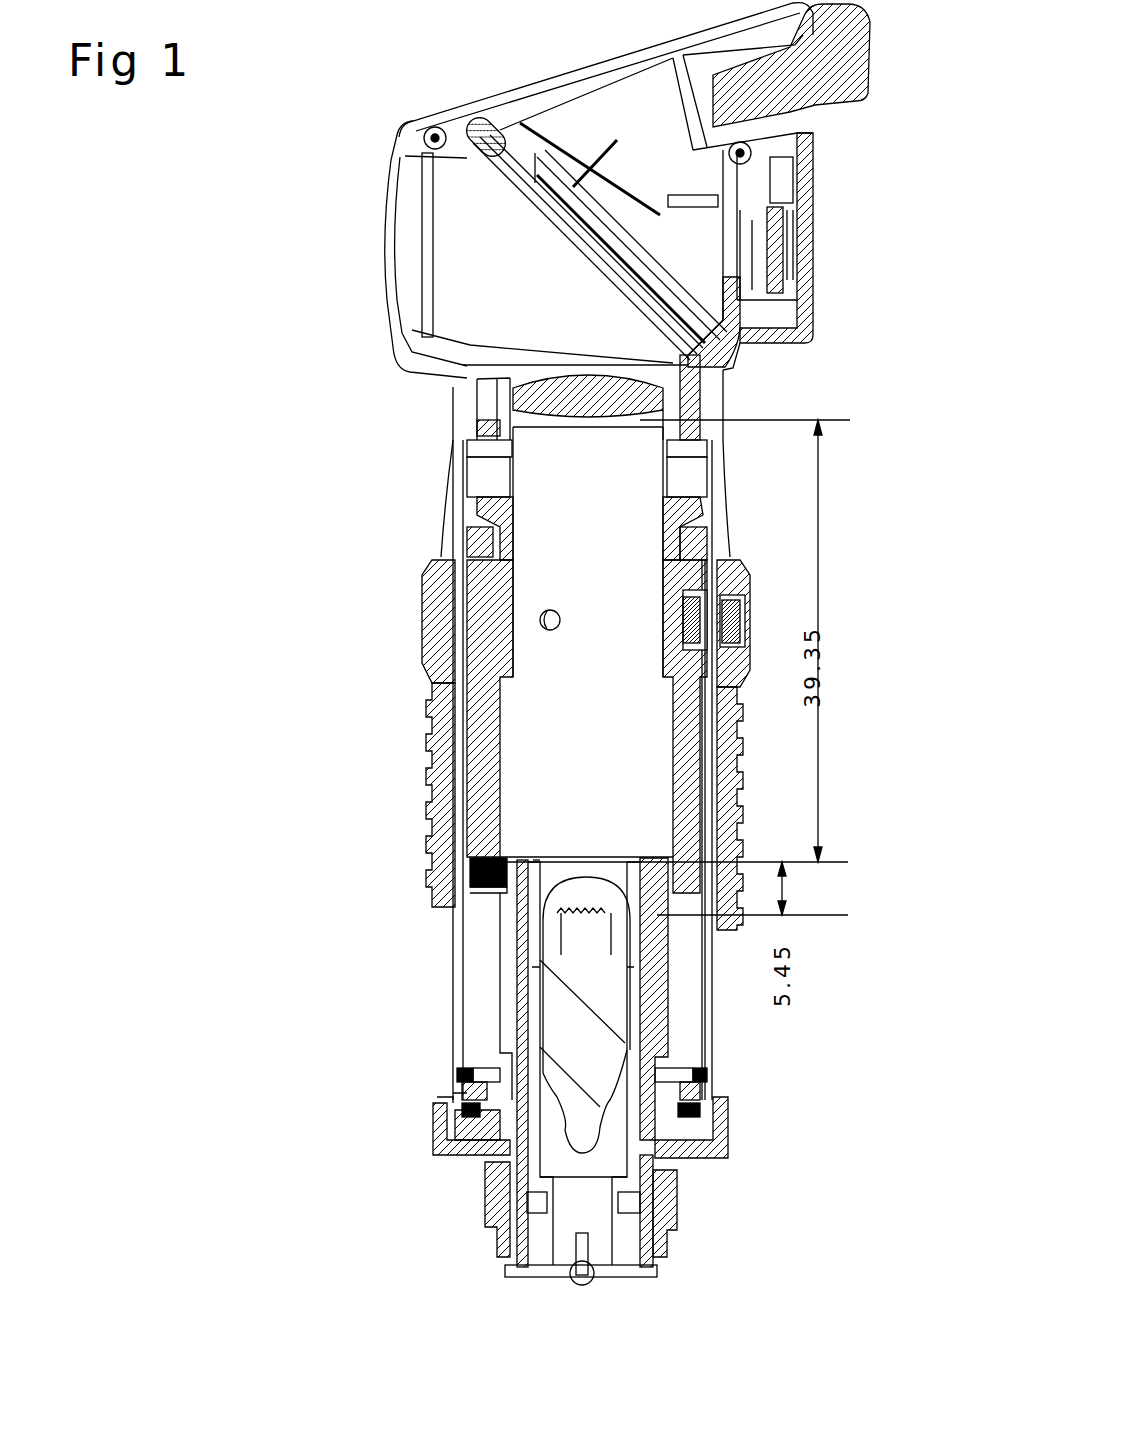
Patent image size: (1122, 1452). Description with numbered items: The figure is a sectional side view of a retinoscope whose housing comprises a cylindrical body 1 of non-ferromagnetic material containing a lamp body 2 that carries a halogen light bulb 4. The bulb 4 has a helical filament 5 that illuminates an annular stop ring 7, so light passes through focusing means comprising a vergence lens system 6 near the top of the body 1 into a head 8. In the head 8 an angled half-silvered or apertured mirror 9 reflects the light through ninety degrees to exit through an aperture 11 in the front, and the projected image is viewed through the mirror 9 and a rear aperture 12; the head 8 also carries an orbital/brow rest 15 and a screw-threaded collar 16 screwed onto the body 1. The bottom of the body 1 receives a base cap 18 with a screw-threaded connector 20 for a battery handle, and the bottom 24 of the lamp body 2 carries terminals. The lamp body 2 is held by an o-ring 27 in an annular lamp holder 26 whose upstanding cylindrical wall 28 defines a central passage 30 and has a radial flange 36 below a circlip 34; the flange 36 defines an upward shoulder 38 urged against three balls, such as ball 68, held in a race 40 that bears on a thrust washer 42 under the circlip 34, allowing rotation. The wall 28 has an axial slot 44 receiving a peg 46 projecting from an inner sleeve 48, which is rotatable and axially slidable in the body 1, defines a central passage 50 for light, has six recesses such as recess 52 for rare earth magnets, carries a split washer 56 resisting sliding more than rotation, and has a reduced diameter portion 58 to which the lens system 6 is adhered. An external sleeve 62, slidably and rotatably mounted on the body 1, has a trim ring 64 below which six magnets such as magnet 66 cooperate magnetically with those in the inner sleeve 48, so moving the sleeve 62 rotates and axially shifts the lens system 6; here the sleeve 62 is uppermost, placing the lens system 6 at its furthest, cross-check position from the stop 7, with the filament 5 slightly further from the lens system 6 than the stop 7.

The cylindrical body 1 is at (460, 512).
The lamp body 2 is at (507, 1162).
The halogen light bulb 4 is at (540, 947).
The helical filament 5 is at (587, 907).
The vergence lens system 6 is at (467, 390).
The annular stop ring 7 is at (545, 873).
The head 8 is at (413, 115).
The mirror 9 is at (533, 127).
The aperture 11 is at (383, 218).
The rear aperture 12 is at (813, 253).
The orbital/brow rest 15 is at (873, 42).
The collar 16 is at (703, 400).
The base cap 18 is at (723, 1158).
The screw-threaded connector 20 is at (680, 1213).
The bottom of the lamp body 24 is at (600, 1277).
The annular lamp holder 26 is at (517, 1008).
The o-ring 27 is at (487, 1213).
The upstanding cylindrical wall 28 is at (675, 1010).
The central passage 30 is at (480, 882).
The circlip 34 is at (457, 1073).
The radial flange 36 is at (435, 1115).
The annular upward shoulder 38 is at (707, 1087).
The race 40 is at (702, 1112).
The thrust washer 42 is at (707, 1078).
The axial slot 44 is at (507, 920).
The peg 46 is at (470, 855).
The inner sleeve 48 is at (480, 755).
The central passage 50 is at (594, 727).
The recess 52 is at (707, 590).
The split washer 56 is at (470, 462).
The reduced diameter cylindrical portion 58 is at (703, 482).
The external sleeve 62 is at (732, 772).
The trim ring 64 is at (420, 582).
The magnet 66 is at (740, 607).
The ball 68 is at (453, 1103).